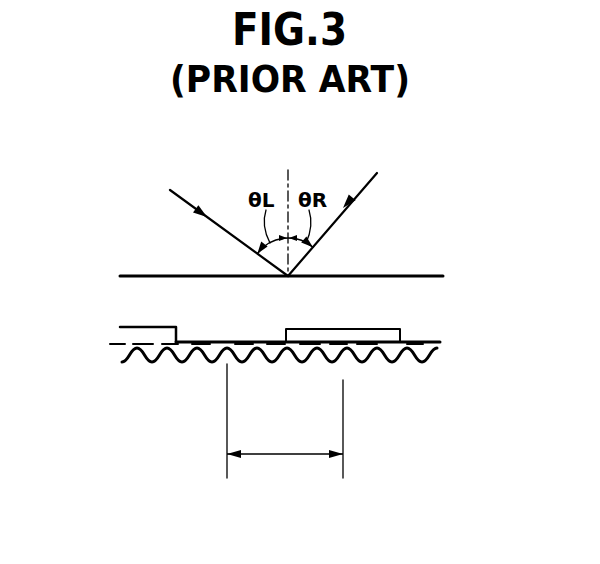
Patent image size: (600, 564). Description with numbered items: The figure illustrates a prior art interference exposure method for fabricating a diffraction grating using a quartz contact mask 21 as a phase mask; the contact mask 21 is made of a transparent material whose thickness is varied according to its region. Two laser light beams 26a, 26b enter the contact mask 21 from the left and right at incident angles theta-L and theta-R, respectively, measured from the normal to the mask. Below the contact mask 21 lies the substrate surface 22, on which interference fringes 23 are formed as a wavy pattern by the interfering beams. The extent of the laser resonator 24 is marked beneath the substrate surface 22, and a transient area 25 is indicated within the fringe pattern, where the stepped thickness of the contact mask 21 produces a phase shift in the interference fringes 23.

The contact mask 21 is at (410, 290).
The substrate surface 22 is at (118, 347).
The interference fringes 23 is at (387, 365).
The laser resonator 24 is at (285, 426).
The transient area 25 is at (300, 362).
The laser light beam 26a is at (221, 226).
The laser light beam 26b is at (341, 214).